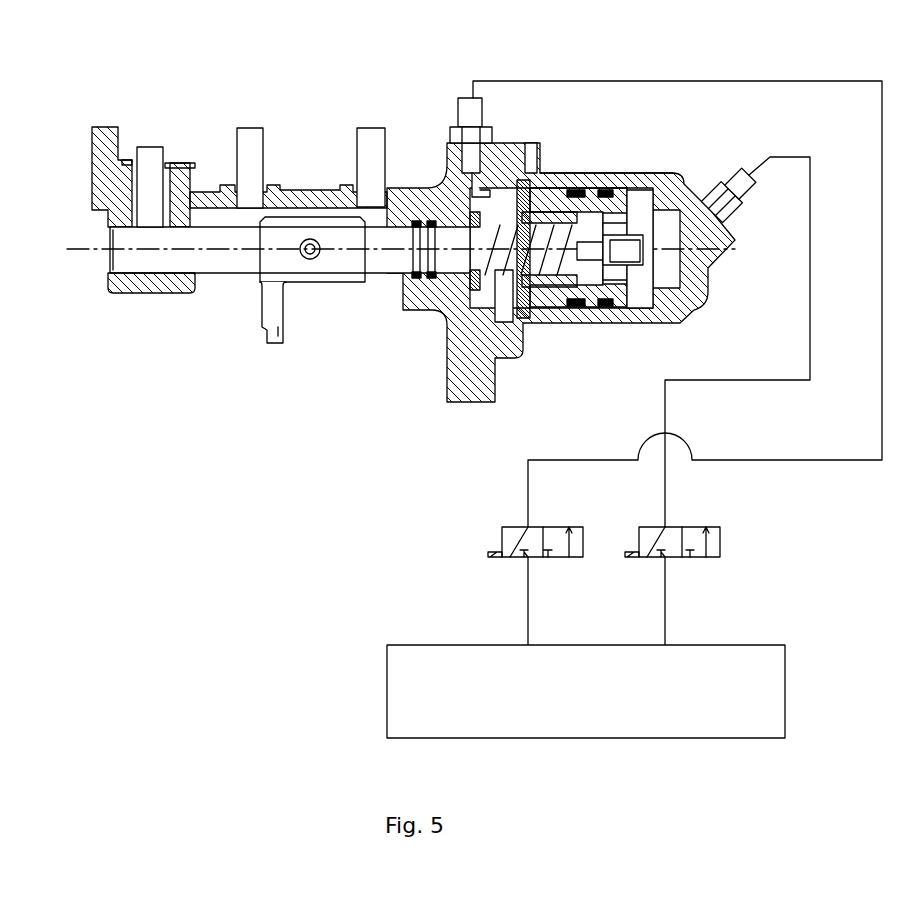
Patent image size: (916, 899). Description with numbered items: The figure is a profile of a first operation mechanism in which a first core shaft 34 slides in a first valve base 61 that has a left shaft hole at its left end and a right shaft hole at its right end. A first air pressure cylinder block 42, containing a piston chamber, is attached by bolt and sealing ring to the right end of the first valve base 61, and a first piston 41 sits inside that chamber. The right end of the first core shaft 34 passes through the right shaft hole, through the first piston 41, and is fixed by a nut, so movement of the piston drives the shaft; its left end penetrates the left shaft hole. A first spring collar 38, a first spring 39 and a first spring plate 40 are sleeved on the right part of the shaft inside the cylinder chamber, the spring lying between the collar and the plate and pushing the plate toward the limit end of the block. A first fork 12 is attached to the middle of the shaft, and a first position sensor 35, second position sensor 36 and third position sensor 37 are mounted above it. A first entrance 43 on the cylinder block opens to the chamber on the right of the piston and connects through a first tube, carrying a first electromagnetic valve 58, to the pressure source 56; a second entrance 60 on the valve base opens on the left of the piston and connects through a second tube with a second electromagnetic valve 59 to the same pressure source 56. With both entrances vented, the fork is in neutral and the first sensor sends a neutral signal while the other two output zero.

The first fork 12 is at (278, 345).
The first core shaft 34 is at (227, 263).
The first position sensor 35 is at (148, 153).
The second position sensor 36 is at (247, 148).
The third position sensor 37 is at (365, 137).
The first spring collar 38 is at (442, 152).
The first spring 39 is at (483, 268).
The first spring plate 40 is at (525, 193).
The first piston 41 is at (637, 180).
The first air pressure cylinder block 42 is at (738, 177).
The first entrance 43 is at (745, 188).
The pressure source 56 is at (772, 682).
The first electromagnetic valve 58 is at (713, 545).
The second electromagnetic valve 59 is at (497, 555).
The second entrance 60 is at (467, 105).
The first valve base 61 is at (117, 293).